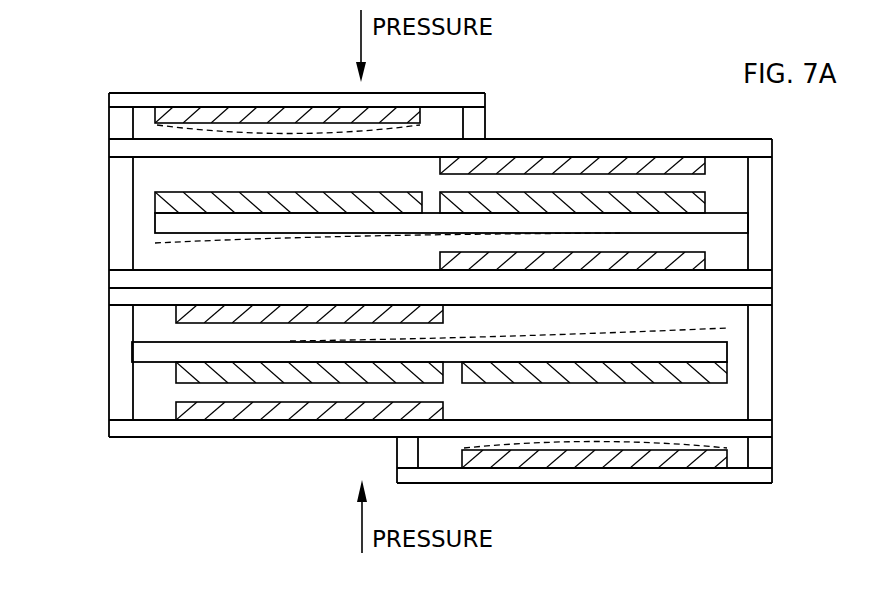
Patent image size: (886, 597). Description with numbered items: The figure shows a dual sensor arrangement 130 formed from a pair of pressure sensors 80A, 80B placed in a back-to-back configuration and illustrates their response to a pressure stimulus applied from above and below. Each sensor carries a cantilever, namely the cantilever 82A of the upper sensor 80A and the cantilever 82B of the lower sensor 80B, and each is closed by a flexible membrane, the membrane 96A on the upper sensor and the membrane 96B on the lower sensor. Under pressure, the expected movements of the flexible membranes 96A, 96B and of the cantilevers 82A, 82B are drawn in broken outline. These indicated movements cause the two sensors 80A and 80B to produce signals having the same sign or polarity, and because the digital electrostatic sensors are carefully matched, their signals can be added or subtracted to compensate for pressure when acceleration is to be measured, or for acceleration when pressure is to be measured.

The actuator assembly 130 is at (585, 47).
The pressure sensor 80A is at (585, 108).
The pressure sensor 80B is at (282, 475).
The cantilever 82A is at (155, 229).
The cantilever 82B is at (727, 348).
The flexible membrane 96A is at (190, 93).
The flexible membrane 96B is at (680, 483).